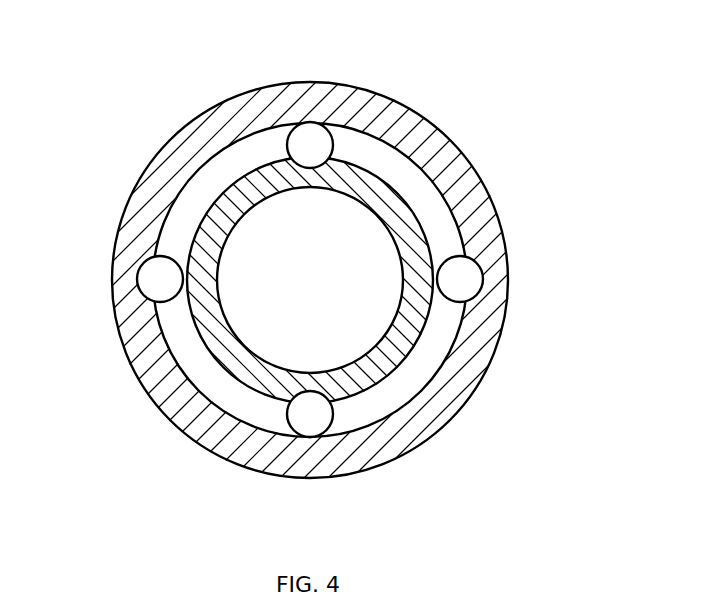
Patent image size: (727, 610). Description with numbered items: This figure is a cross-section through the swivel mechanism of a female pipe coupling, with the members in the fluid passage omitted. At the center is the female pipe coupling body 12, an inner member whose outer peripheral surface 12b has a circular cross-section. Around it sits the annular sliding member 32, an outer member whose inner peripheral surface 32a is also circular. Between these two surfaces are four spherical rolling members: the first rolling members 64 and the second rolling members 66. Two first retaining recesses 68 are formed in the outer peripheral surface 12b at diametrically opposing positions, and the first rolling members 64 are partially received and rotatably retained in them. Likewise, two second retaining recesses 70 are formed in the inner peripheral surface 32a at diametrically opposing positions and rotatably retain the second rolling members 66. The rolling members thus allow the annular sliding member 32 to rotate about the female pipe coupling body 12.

The female pipe coupling body 12 is at (367, 187).
The outer peripheral surface 12b is at (417, 208).
The annular sliding member 32 is at (208, 137).
The inner peripheral surface 32a is at (204, 168).
The first rolling members 64 is at (308, 415).
The second rolling members 66 is at (462, 280).
The first retaining recesses 68 is at (317, 392).
The second retaining recesses 70 is at (142, 288).